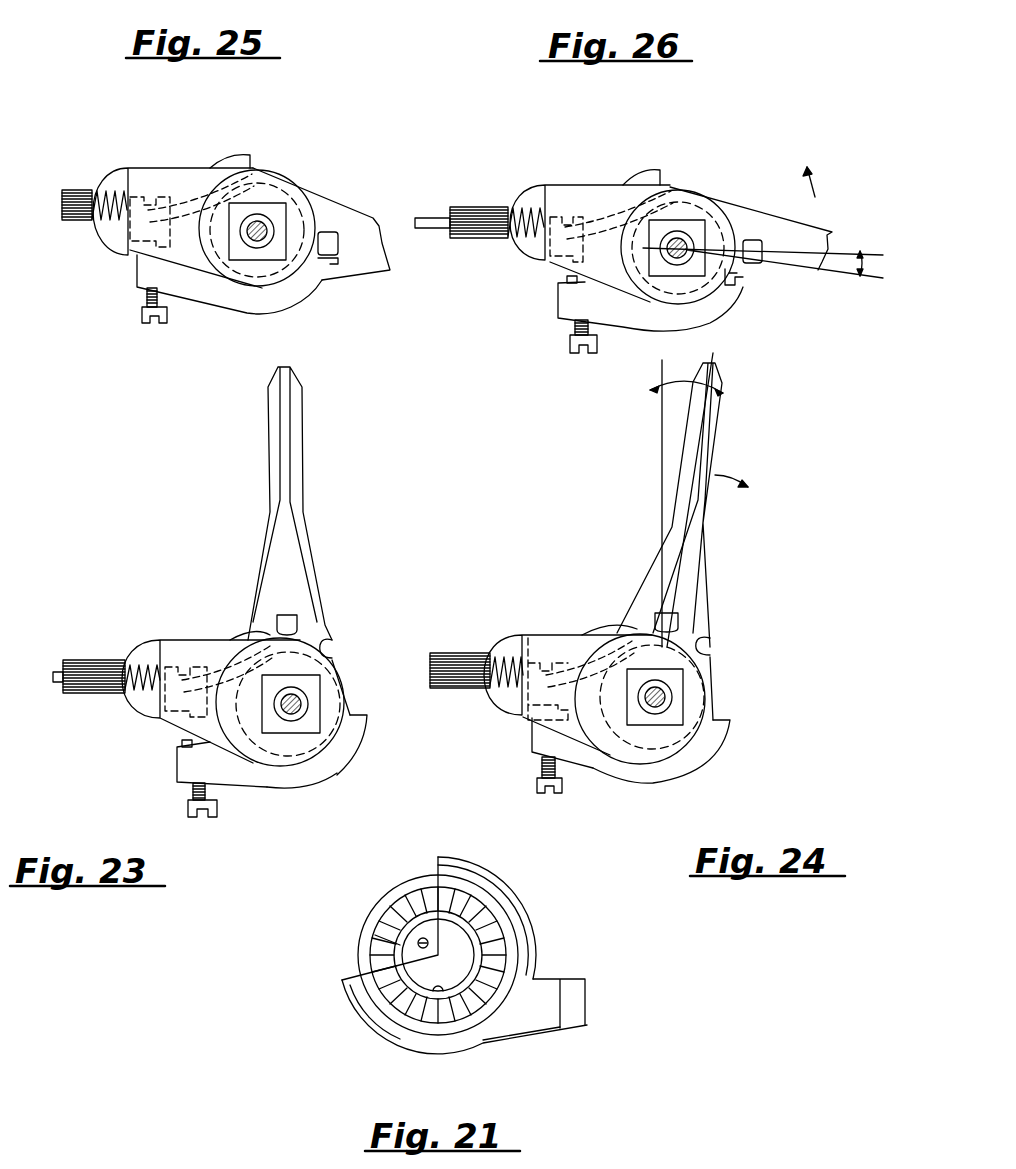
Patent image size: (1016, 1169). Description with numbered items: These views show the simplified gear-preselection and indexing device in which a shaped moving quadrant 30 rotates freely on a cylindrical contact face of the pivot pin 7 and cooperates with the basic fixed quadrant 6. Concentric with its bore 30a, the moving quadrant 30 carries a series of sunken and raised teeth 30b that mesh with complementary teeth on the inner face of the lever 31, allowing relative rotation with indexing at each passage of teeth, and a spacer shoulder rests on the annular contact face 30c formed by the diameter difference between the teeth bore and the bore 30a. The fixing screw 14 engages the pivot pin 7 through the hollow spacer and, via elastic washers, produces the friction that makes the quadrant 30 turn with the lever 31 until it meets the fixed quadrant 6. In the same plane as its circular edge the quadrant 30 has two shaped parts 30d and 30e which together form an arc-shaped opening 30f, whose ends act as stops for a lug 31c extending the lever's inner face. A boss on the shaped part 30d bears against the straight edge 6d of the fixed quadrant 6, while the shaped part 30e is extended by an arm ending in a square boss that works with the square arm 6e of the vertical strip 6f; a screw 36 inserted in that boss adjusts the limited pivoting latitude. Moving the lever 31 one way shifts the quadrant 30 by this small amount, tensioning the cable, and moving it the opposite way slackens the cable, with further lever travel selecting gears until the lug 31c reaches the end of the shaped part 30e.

In FIG. 24, the fixed quadrant 6 is at (541, 667).
In FIG. 25, the straight edge 6d is at (162, 201).
In FIG. 26, the straight edge 6d is at (542, 207).
In FIG. 23, the straight edge 6d is at (176, 673).
In FIG. 25, the square arm 6e is at (155, 219).
In FIG. 24, the square arm 6e is at (537, 686).
In FIG. 26, the vertical strip 6f is at (601, 187).
In FIG. 23, the vertical strip 6f is at (185, 650).
In FIG. 25, the pivot pin 7 is at (238, 272).
In FIG. 24, the pivot pin 7 is at (686, 697).
In FIG. 23, the fixing screw 14 is at (291, 748).
In FIG. 24, the moving quadrant 30 is at (652, 729).
In FIG. 21, the moving quadrant 30 is at (537, 935).
In FIG. 21, the bore 30a is at (435, 992).
In FIG. 21, the teeth 30b is at (457, 895).
In FIG. 21, the annular contact face 30c is at (400, 945).
In FIG. 23, the shaped part 30d is at (300, 730).
In FIG. 21, the shaped part 30d is at (512, 903).
In FIG. 25, the shaped part 30e is at (341, 286).
In FIG. 26, the shaped part 30e is at (755, 294).
In FIG. 21, the shaped part 30e is at (367, 1018).
In FIG. 21, the opening 30f is at (370, 917).
In FIG. 25, the lever 31 is at (321, 196).
In FIG. 26, the lever 31 is at (763, 196).
In FIG. 23, the lever 31 is at (296, 503).
In FIG. 24, the lever 31 is at (686, 500).
In FIG. 25, the lug 31c is at (363, 273).
In FIG. 26, the lug 31c is at (788, 280).
In FIG. 23, the lug 31c is at (329, 608).
In FIG. 24, the lug 31c is at (709, 605).
In FIG. 25, the screw 36 is at (130, 314).
In FIG. 26, the screw 36 is at (557, 336).
In FIG. 23, the screw 36 is at (172, 802).
In FIG. 24, the screw 36 is at (568, 790).